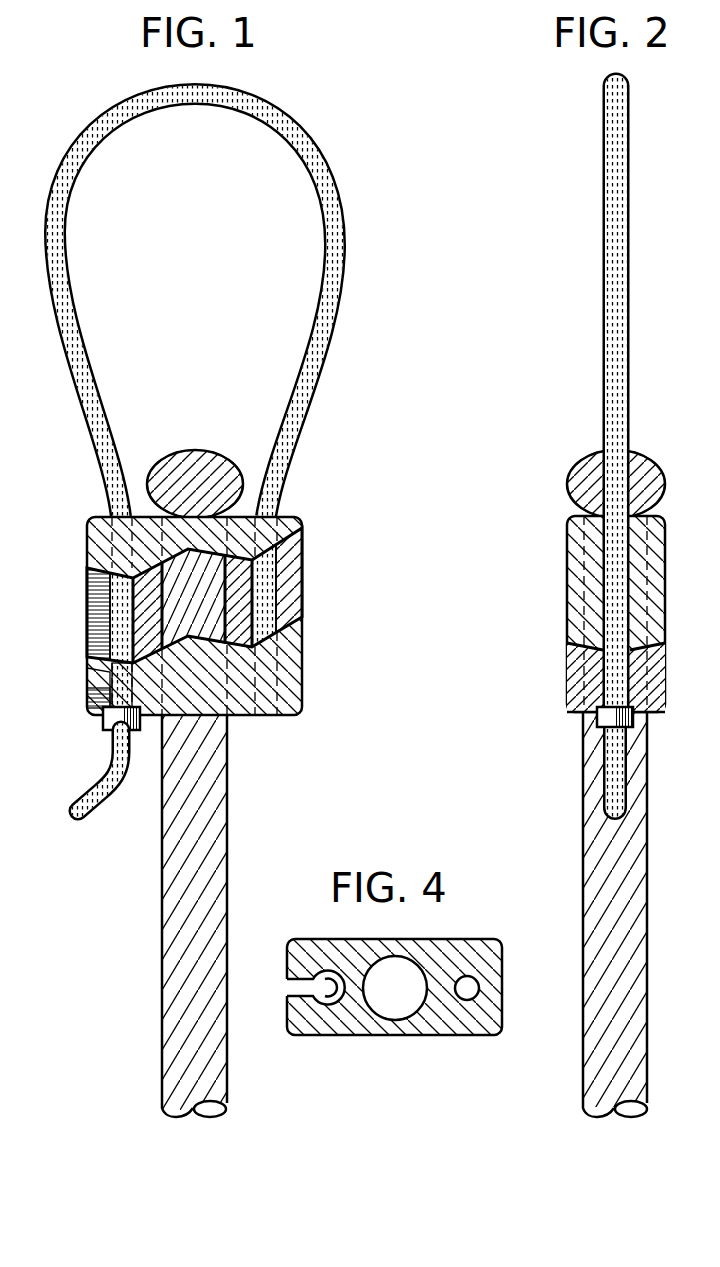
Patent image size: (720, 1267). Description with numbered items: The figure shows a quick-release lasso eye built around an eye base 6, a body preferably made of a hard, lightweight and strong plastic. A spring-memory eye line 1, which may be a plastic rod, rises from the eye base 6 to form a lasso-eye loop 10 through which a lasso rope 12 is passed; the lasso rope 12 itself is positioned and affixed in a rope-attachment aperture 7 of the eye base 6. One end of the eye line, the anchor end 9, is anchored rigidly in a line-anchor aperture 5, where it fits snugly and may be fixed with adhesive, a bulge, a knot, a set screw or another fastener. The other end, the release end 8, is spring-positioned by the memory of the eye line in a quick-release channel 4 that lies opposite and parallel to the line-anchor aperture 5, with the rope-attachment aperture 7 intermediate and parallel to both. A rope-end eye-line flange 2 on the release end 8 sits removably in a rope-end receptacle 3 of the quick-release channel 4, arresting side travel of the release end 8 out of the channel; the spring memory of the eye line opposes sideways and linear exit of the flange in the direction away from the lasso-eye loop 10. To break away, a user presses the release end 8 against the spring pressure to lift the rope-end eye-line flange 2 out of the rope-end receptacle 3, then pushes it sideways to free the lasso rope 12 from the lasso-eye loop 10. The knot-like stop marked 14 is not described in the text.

In FIG. 1, the spring-memory eye line 1 is at (343, 262).
In FIG. 2, the spring-memory eye line 1 is at (615, 265).
In FIG. 1, the rope-end eye-line flange 2 is at (113, 717).
In FIG. 2, the rope-end eye-line flange 2 is at (610, 718).
In FIG. 1, the rope-end receptacle 3 is at (98, 700).
In FIG. 2, the rope-end receptacle 3 is at (595, 715).
In FIG. 4, the rope-end receptacle 3 is at (338, 1006).
In FIG. 1, the quick-release channel 4 is at (204, 603).
In FIG. 2, the quick-release channel 4 is at (603, 598).
In FIG. 4, the quick-release channel 4 is at (318, 986).
In FIG. 1, the line-anchor aperture 5 is at (300, 557).
In FIG. 4, the line-anchor aperture 5 is at (468, 993).
In FIG. 1, the eye base 6 is at (288, 525).
In FIG. 2, the eye base 6 is at (595, 602).
In FIG. 4, the eye base 6 is at (500, 1032).
In FIG. 1, the rope-attachment aperture 7 is at (230, 678).
In FIG. 2, the rope-attachment aperture 7 is at (584, 560).
In FIG. 4, the rope-attachment aperture 7 is at (393, 990).
In FIG. 1, the release end 8 is at (120, 596).
In FIG. 2, the release end 8 is at (615, 668).
In FIG. 1, the anchor end 9 is at (262, 592).
In FIG. 1, the lasso-eye loop 10 is at (352, 377).
In FIG. 2, the lasso-eye loop 10 is at (595, 601).
In FIG. 1, the lasso rope 12 is at (180, 967).
In FIG. 2, the lasso rope 12 is at (620, 937).
In FIG. 1, the knot stop 14 is at (112, 517).
In FIG. 2, the knot stop 14 is at (567, 500).